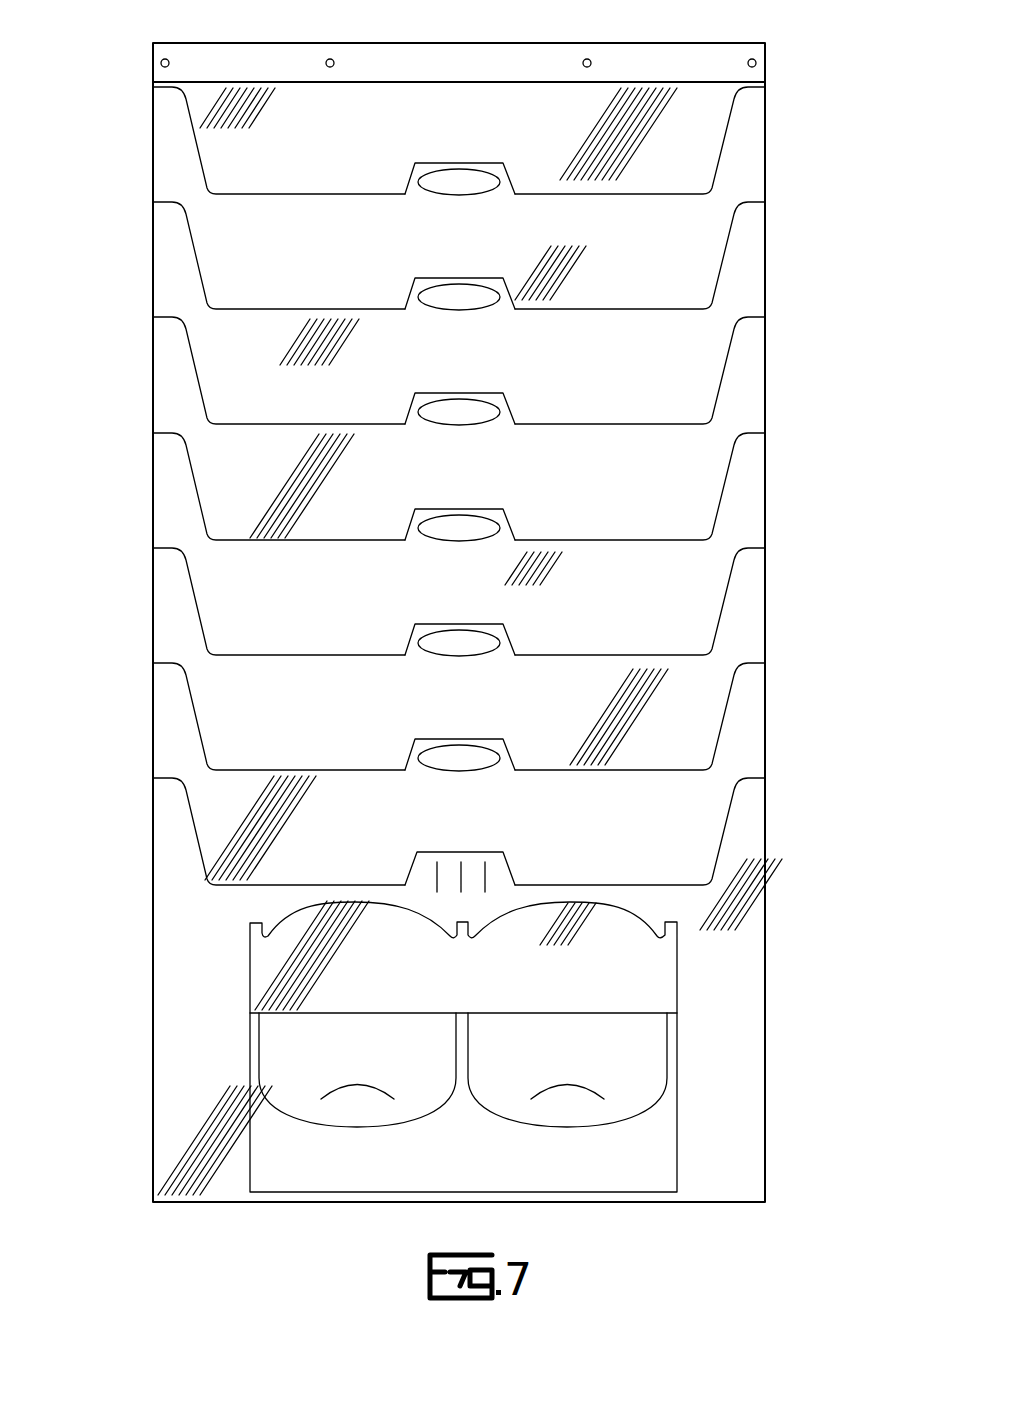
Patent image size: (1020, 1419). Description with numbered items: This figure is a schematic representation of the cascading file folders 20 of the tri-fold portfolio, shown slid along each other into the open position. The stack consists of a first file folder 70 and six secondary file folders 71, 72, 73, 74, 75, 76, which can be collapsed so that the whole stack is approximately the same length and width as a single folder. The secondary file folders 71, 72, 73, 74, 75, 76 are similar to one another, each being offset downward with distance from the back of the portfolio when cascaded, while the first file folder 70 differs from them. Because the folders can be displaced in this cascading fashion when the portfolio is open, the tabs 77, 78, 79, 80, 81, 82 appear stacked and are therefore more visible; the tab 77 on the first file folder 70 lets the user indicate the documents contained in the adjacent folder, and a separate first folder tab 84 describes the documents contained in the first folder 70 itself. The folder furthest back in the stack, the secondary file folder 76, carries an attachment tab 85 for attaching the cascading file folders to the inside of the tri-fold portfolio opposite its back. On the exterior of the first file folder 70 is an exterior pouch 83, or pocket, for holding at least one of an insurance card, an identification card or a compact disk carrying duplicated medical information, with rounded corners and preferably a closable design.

The storage rack assembly 20 is at (134, 483).
The first file folder 70 is at (742, 833).
The secondary file folder 71 is at (742, 712).
The secondary file folder 72 is at (742, 602).
The secondary file folder 73 is at (742, 490).
The secondary file folder 74 is at (742, 371).
The secondary file folder 75 is at (742, 255).
The secondary file folder 76 is at (742, 140).
The tab 77 is at (409, 762).
The tab 78 is at (409, 647).
The tab 79 is at (409, 532).
The tab 80 is at (409, 416).
The tab 81 is at (409, 301).
The tab 82 is at (409, 186).
The exterior pouch 83 is at (678, 1060).
The first folder tab 84 is at (409, 877).
The attachment tab 85 is at (620, 42).